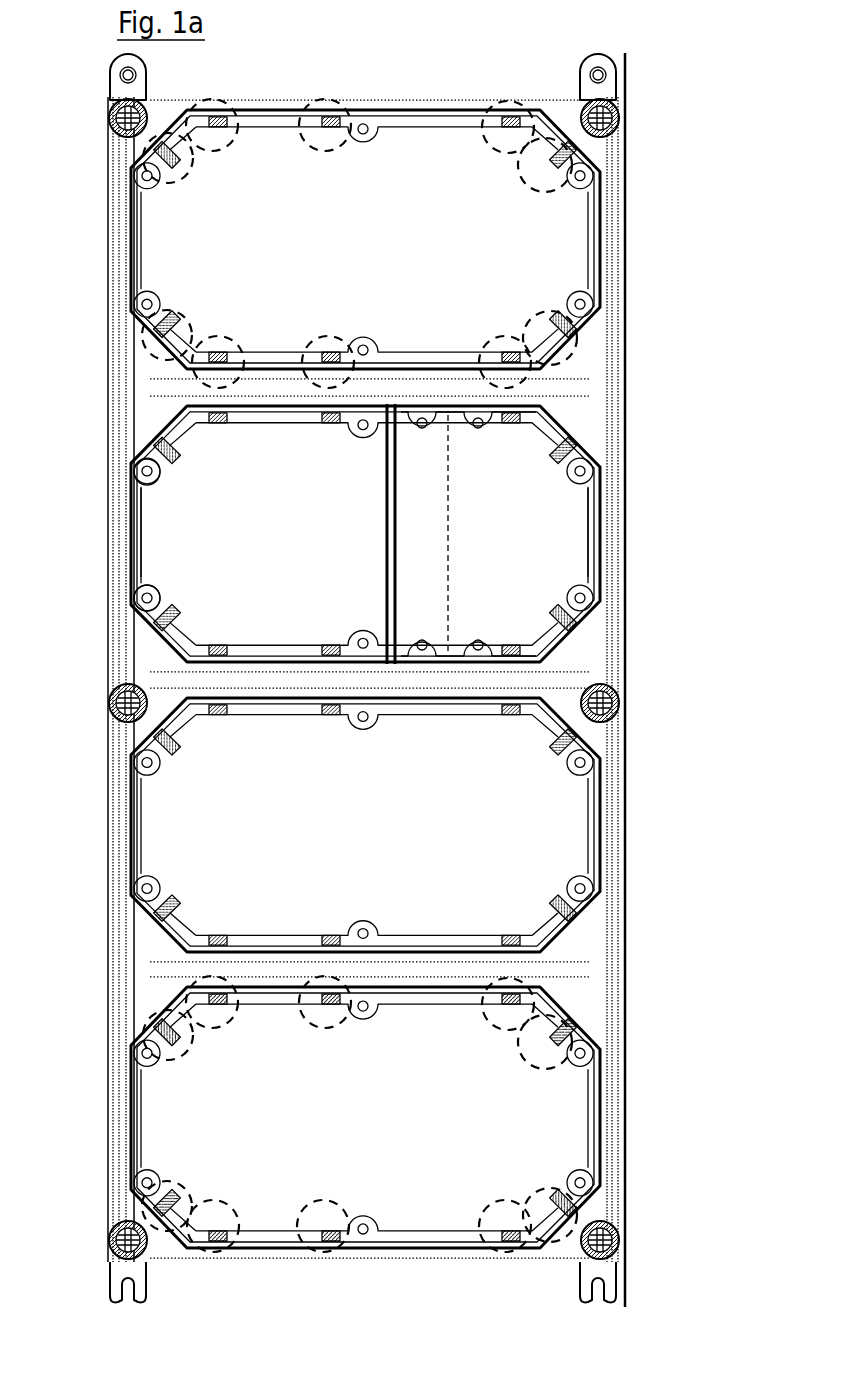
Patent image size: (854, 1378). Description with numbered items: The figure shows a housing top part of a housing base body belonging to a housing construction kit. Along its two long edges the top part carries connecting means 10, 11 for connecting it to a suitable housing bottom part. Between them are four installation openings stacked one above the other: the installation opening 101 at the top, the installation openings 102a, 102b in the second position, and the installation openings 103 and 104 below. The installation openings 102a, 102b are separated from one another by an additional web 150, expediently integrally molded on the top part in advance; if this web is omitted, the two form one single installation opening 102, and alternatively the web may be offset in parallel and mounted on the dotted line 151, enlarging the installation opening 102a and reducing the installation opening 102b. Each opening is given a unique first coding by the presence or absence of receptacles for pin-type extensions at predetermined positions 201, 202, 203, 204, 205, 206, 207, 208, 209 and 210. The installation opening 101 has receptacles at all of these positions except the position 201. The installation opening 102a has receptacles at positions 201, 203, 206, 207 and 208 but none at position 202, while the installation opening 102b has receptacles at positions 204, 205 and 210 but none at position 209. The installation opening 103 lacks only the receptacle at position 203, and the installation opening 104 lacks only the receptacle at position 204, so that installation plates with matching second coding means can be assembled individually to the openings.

The connecting means 10 is at (105, 56).
The connecting means 11 is at (105, 116).
The installation opening 101 is at (365, 239).
The installation opening 102 is at (365, 534).
The installation opening 102a is at (183, 535).
The installation opening 102b is at (494, 534).
The installation opening 103 is at (365, 825).
The installation opening 104 is at (365, 1117).
The web 150 is at (373, 522).
The dotted line 151 is at (463, 485).
The predetermined position 201 is at (181, 611).
The predetermined position 202 is at (219, 575).
The predetermined position 203 is at (325, 579).
The predetermined position 204 is at (489, 579).
The predetermined position 205 is at (531, 615).
The predetermined position 206 is at (181, 754).
The predetermined position 207 is at (219, 784).
The predetermined position 208 is at (324, 784).
The predetermined position 209 is at (493, 779).
The predetermined position 210 is at (538, 760).